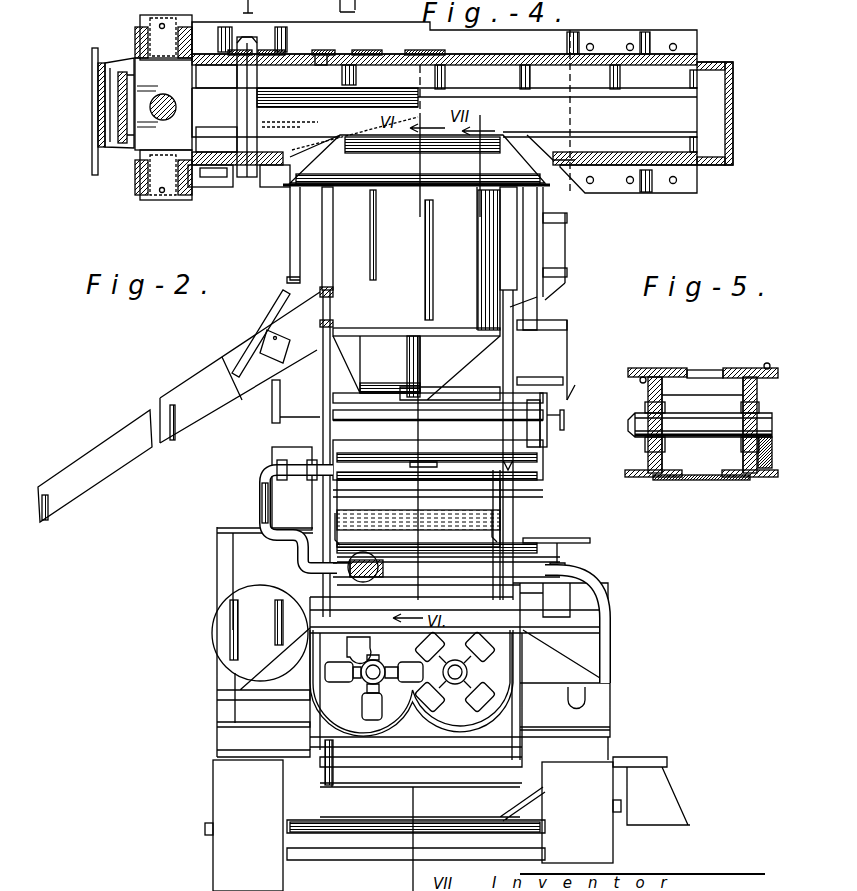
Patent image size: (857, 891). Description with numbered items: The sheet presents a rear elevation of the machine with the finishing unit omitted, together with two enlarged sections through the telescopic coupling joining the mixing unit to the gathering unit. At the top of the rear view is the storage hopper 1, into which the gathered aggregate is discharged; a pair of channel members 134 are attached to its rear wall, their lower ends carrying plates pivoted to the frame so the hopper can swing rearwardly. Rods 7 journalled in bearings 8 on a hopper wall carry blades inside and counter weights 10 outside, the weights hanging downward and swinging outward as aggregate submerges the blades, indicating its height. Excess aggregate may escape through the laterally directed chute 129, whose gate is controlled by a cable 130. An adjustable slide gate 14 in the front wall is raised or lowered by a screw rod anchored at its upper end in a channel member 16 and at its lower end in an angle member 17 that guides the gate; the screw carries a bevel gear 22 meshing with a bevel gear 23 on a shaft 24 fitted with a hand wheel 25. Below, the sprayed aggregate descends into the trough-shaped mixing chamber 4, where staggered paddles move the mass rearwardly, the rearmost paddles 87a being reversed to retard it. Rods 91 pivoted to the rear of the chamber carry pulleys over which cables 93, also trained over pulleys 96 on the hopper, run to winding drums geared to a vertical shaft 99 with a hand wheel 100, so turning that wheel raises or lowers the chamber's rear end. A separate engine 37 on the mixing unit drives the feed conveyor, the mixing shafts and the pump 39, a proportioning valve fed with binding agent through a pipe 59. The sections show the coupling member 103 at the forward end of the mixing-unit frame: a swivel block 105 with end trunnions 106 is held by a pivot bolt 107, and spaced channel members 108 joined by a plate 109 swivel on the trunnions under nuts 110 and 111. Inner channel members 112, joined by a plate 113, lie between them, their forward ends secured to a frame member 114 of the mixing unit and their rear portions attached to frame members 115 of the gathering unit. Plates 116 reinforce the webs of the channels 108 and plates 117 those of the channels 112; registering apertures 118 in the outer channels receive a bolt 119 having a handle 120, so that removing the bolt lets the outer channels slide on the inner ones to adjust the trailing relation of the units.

In FIG. 2, the storage hopper 1 is at (350, 223).
In FIG. 2, the mixing chamber 4 is at (413, 735).
In FIG. 2, the rods 7 is at (567, 250).
In FIG. 2, the bearings 8 is at (567, 218).
In FIG. 2, the counter weights 10 is at (577, 320).
In FIG. 2, the slide gate 14 is at (320, 443).
In FIG. 2, the channel member 16 is at (367, 328).
In FIG. 2, the angle member 17 is at (333, 400).
In FIG. 2, the bevel gear 22 is at (413, 413).
In FIG. 2, the bevel gear 23 is at (433, 418).
In FIG. 2, the shaft 24 is at (533, 410).
In FIG. 2, the hand wheel 25 is at (547, 437).
In FIG. 2, the engine 37 is at (260, 497).
In FIG. 2, the pump 39 is at (300, 572).
In FIG. 2, the pipe 59 is at (547, 570).
In FIG. 2, the rearmost mixing paddles 87a is at (373, 720).
In FIG. 2, the rods 91 is at (300, 510).
In FIG. 2, the cables 93 is at (503, 380).
In FIG. 2, the pulleys 96 is at (325, 300).
In FIG. 2, the vertical shaft 99 is at (560, 560).
In FIG. 2, the hand wheel 100 is at (580, 537).
In FIG. 4, the coupling member 103 is at (93, 90).
In FIG. 4, the swivel block 105 is at (143, 143).
In FIG. 4, the end trunnions 106 is at (157, 28).
In FIG. 4, the pivot bolt 107 is at (170, 95).
In FIG. 4, the channel members 108 is at (453, 58).
In FIG. 5, the channel members 108 is at (648, 398).
In FIG. 5, the plate 109 is at (693, 370).
In FIG. 4, the nut 110 is at (137, 50).
In FIG. 4, the nut 111 is at (160, 193).
In FIG. 4, the channel members 112 is at (553, 83).
In FIG. 5, the channel members 112 is at (741, 455).
In FIG. 5, the plate 113 is at (710, 480).
In FIG. 4, the frame member 114 is at (733, 115).
In FIG. 4, the frame members 115 is at (358, 12).
In FIG. 4, the plates 116 is at (267, 178).
In FIG. 5, the plates 116 is at (648, 440).
In FIG. 4, the plates 117 is at (247, 13).
In FIG. 5, the plates 117 is at (720, 400).
In FIG. 4, the apertures 118 is at (350, 50).
In FIG. 4, the bolt 119 is at (257, 108).
In FIG. 5, the bolt 119 is at (773, 423).
In FIG. 4, the handle 120 is at (208, 178).
In FIG. 5, the handle 120 is at (773, 460).
In FIG. 2, the chute 129 is at (107, 470).
In FIG. 2, the cable 130 is at (550, 420).
In FIG. 2, the channel members 134 is at (500, 223).